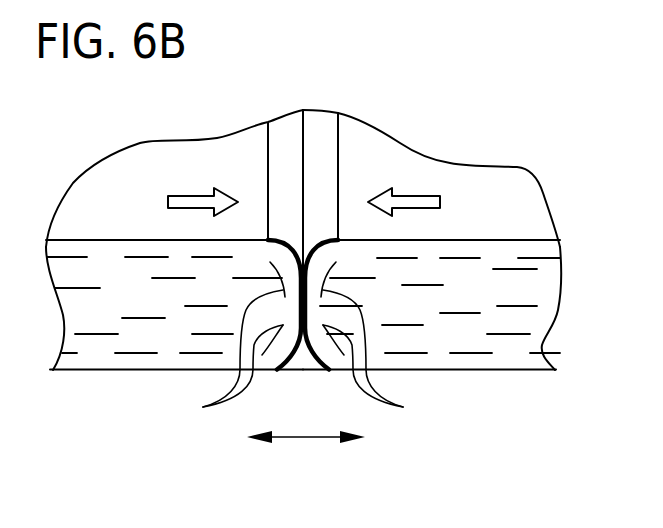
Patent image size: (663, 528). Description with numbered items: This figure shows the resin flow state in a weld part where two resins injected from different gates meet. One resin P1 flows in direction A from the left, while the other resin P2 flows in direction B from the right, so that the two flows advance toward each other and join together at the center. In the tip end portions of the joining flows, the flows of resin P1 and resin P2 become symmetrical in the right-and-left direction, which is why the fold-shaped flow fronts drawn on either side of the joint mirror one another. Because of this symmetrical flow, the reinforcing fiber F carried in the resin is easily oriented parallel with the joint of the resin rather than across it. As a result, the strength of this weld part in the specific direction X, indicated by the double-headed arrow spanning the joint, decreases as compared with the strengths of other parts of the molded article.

The flow direction A is at (181, 194).
The flow direction B is at (428, 203).
The reinforcing fiber F is at (300, 347).
The resin P1 is at (133, 370).
The resin P2 is at (467, 370).
The direction X is at (306, 464).